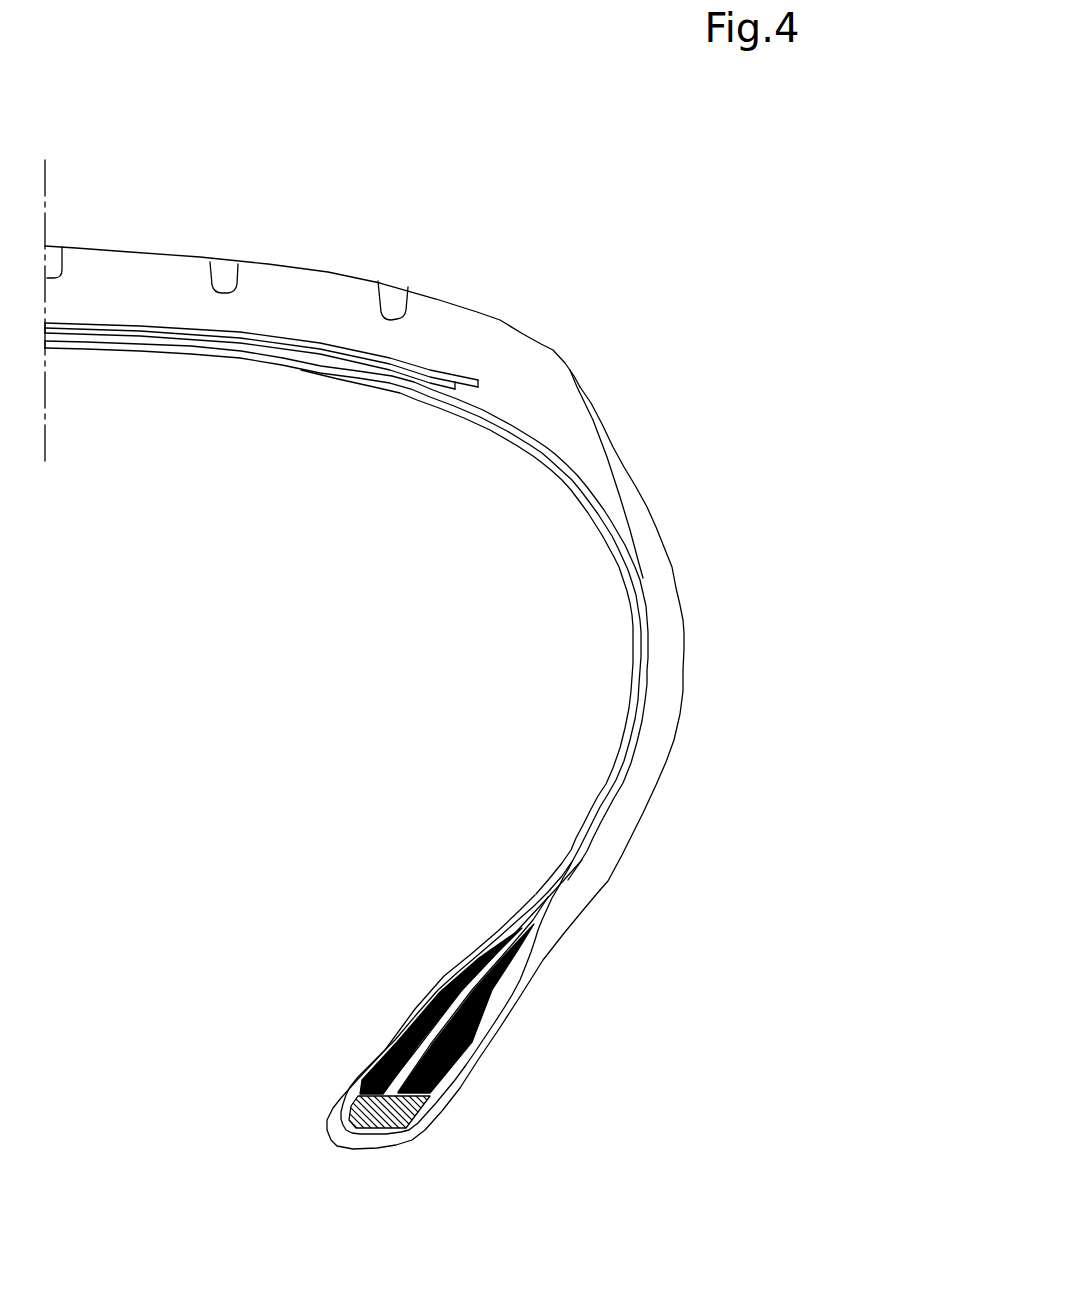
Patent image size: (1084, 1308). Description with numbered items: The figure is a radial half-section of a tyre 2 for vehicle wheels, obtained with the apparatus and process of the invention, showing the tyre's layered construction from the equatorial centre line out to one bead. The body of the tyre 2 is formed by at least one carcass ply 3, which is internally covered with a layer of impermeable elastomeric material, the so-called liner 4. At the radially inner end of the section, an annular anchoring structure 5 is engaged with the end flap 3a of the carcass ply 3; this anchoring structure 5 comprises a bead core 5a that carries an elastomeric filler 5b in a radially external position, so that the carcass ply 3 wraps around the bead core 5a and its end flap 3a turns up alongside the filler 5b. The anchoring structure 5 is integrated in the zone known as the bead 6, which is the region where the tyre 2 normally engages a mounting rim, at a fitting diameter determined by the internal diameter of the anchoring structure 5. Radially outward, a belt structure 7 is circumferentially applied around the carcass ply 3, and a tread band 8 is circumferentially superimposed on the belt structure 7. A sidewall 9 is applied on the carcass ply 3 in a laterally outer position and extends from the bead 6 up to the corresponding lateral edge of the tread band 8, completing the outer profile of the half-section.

The tyre 2 is at (220, 770).
The carcass ply 3 is at (538, 435).
The end flaps 3a is at (420, 1113).
The liner 4 is at (463, 416).
The annular anchoring structures 5 is at (365, 1078).
The bead core 5a is at (378, 1115).
The elastomeric filler 5b is at (440, 1018).
The beads 6 is at (490, 1102).
The belt structure 7 is at (438, 360).
The tread band 8 is at (300, 266).
The sidewalls 9 is at (684, 702).